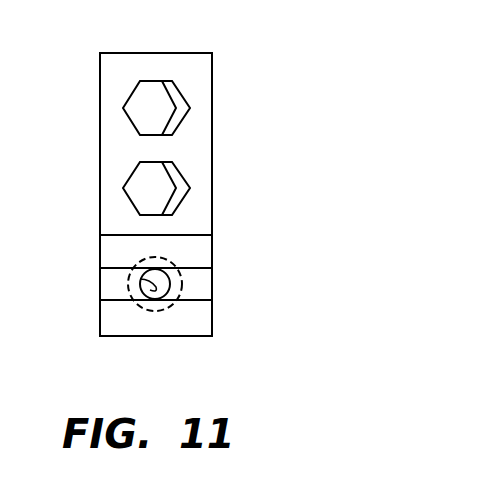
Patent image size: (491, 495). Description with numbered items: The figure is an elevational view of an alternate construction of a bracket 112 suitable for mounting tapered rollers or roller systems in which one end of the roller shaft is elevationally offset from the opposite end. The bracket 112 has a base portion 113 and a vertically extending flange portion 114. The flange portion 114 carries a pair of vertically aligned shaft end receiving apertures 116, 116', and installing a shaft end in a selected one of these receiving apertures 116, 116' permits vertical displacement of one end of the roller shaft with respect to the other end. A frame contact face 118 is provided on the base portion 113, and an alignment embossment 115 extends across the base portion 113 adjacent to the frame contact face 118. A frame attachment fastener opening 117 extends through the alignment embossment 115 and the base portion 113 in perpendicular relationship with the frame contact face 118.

The bracket 112 is at (200, 150).
The base portion 113 is at (202, 328).
The flange portion 114 is at (168, 62).
The alignment embossment 115 is at (108, 283).
The shaft end receiving aperture 116 is at (196, 102).
The shaft end receiving aperture 116' is at (198, 181).
The frame attachment fastener opening 117 is at (137, 302).
The frame contact face 118 is at (200, 253).